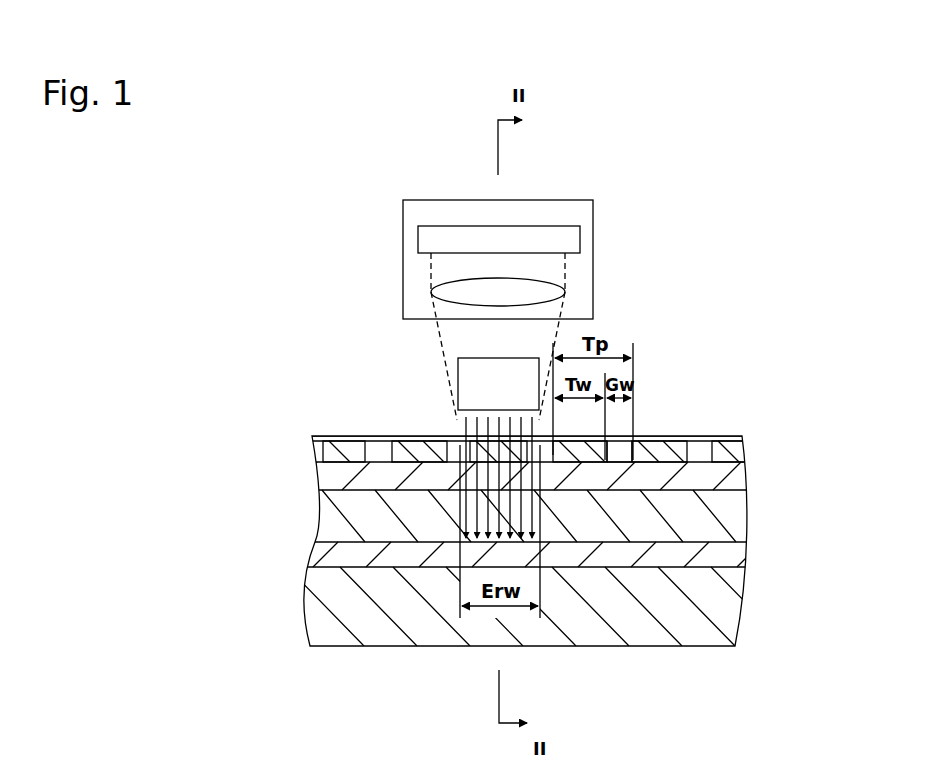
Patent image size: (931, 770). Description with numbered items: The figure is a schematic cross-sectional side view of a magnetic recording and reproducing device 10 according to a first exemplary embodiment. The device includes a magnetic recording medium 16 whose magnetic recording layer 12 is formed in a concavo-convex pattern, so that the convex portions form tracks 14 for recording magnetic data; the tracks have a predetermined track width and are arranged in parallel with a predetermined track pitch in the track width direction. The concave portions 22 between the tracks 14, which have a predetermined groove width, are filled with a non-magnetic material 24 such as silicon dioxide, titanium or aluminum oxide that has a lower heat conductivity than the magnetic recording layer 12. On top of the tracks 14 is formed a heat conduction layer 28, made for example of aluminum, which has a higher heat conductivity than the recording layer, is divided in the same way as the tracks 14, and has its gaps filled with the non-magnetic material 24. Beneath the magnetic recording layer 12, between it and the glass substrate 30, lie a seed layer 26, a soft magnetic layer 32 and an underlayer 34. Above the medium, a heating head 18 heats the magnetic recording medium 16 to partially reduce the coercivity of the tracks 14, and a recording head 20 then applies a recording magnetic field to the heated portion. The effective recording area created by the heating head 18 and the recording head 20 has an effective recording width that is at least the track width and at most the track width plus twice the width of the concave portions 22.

The magnetic recording and reproducing device 10 is at (563, 66).
The magnetic recording layer 12 is at (751, 452).
The tracks 14 is at (575, 452).
The magnetic recording medium 16 is at (276, 528).
The heating head 18 is at (403, 212).
The recording head 20 is at (458, 366).
The concave portions 22 is at (624, 446).
The non-magnetic material 24 is at (618, 462).
The seed layer 26 is at (748, 476).
The heat conduction layer 28 is at (746, 435).
The glass substrate 30 is at (740, 612).
The soft magnetic layer 32 is at (748, 518).
The underlayer 34 is at (748, 558).